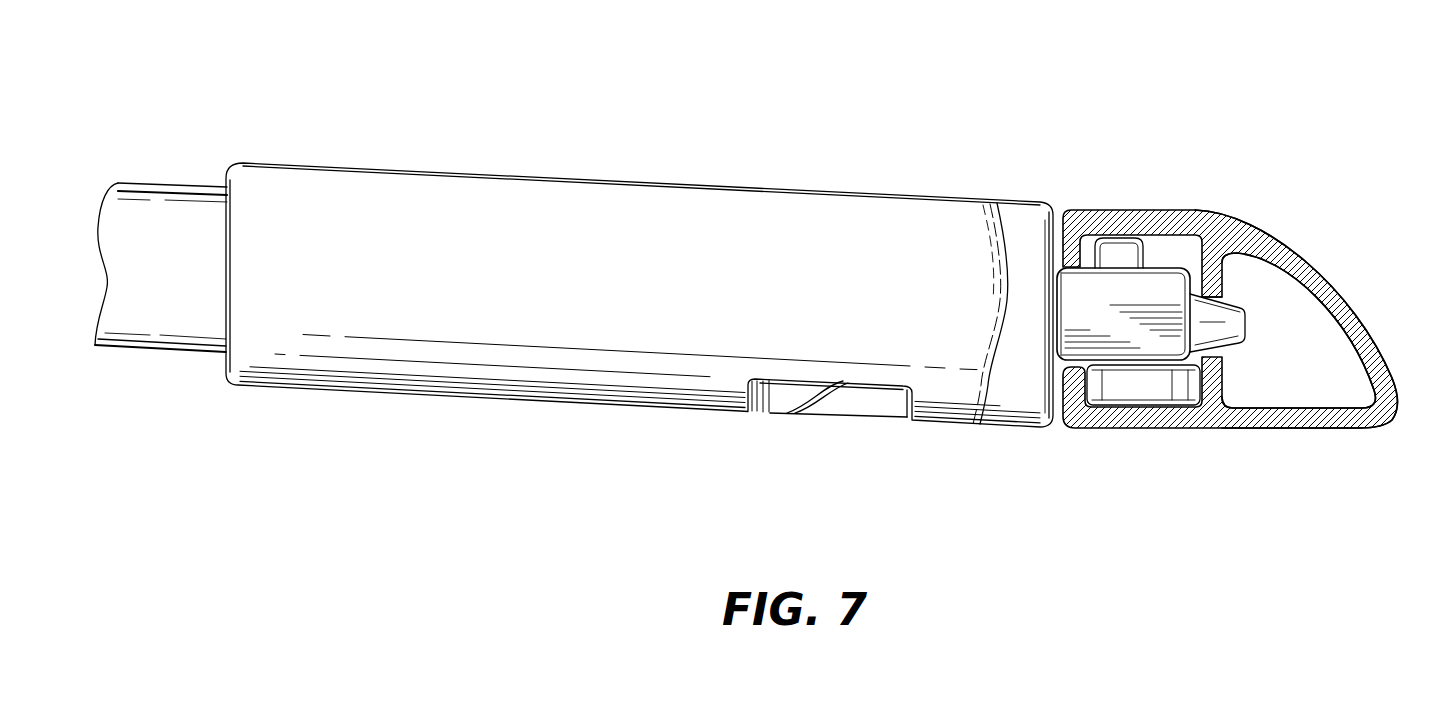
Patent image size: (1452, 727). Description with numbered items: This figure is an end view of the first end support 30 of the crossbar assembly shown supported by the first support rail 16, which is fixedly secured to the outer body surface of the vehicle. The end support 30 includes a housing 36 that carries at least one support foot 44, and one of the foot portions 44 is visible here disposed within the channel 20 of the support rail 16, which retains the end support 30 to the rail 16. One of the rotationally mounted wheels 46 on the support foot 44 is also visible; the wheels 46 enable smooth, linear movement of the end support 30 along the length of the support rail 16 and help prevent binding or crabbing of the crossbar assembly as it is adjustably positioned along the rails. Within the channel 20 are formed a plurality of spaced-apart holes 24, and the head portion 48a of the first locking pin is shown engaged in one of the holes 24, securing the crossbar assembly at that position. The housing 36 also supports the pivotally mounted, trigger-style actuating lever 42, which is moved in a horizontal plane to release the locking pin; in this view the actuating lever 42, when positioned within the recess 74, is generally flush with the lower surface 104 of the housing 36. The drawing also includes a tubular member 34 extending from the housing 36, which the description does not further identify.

The first support rail 16 is at (1362, 300).
The channel 20 is at (1173, 250).
The holes 24 is at (1224, 297).
The first end support 30 is at (611, 101).
The tube 34 is at (190, 184).
The housing 36 is at (877, 230).
The actuating lever 42 is at (860, 407).
The support foot 44 is at (1115, 250).
The wheel 46 is at (1152, 387).
The head portion 48a is at (1233, 322).
The recess 74 is at (768, 407).
The lower surface 104 is at (517, 388).